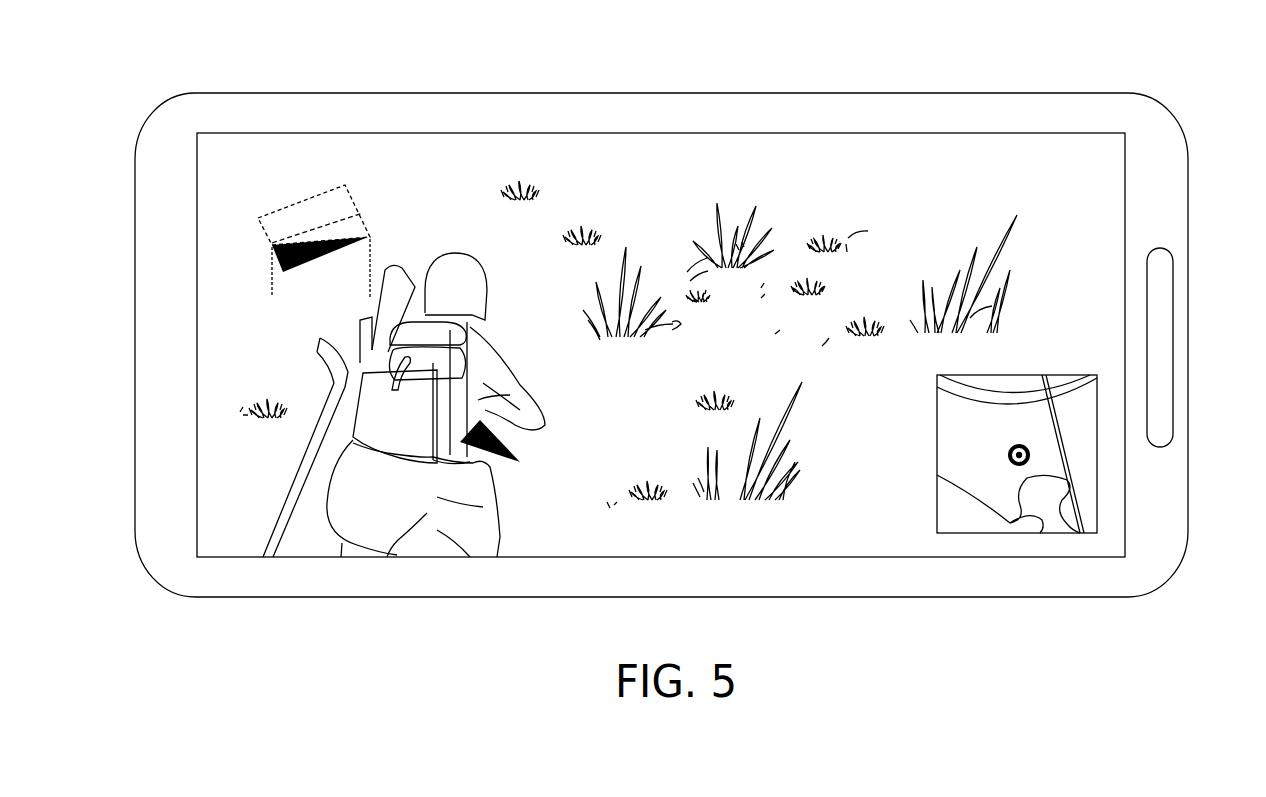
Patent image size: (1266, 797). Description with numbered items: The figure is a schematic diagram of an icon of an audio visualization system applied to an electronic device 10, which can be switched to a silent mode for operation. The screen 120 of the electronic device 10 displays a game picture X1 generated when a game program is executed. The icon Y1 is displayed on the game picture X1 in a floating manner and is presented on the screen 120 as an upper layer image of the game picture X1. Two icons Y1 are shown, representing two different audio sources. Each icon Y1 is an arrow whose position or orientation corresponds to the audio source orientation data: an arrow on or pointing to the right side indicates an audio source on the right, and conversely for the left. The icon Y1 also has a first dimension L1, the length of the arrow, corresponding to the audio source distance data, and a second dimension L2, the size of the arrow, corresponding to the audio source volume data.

The electronic device 10 is at (970, 94).
The screen 120 is at (1075, 185).
The game picture X1 is at (222, 197).
The icon Y1 is at (363, 223).
The first dimension L1 is at (343, 190).
The second dimension L2 is at (272, 292).